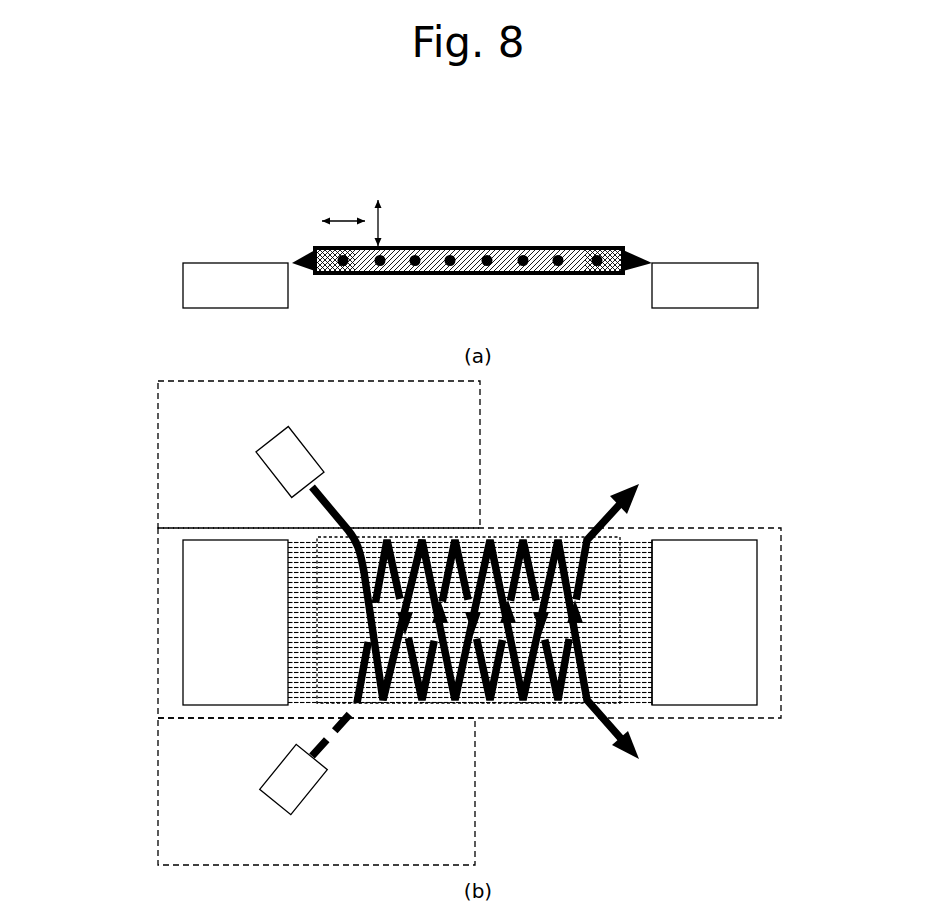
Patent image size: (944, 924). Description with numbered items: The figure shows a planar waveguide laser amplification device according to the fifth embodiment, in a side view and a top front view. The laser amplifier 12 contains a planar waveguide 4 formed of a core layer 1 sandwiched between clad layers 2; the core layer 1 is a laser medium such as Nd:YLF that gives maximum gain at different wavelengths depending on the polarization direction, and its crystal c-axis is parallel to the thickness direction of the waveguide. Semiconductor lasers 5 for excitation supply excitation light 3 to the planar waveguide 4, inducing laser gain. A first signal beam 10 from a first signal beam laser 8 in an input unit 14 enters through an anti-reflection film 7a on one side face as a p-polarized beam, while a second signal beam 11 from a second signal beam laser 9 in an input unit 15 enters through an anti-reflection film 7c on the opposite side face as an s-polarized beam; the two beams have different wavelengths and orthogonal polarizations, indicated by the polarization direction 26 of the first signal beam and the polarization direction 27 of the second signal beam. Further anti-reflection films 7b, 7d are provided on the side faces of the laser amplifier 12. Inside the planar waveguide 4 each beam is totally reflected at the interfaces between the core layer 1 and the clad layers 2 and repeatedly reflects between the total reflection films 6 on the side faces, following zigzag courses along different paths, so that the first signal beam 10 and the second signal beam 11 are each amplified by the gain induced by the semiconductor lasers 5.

The core layer 1 is at (622, 252).
The clad layer 2 is at (542, 248).
The excitation light 3 is at (310, 258).
The planar waveguide 4 is at (493, 248).
The semiconductor laser for excitation 5 is at (722, 263).
The total reflection film 6 is at (424, 537).
The anti-reflection film 7a is at (366, 706).
The anti-reflection film 7b is at (582, 537).
The anti-reflection film 7c is at (368, 537).
The anti-reflection film 7d is at (583, 705).
The first signal beam laser 8 is at (265, 798).
The second signal beam laser 9 is at (270, 441).
The first signal beam 10 is at (640, 487).
The second signal beam 11 is at (337, 505).
The laser amplifier 12 is at (785, 663).
The input unit 14 is at (158, 793).
The input unit 15 is at (158, 445).
The polarization direction of first signal beam 26 is at (345, 218).
The polarization direction of second signal beam 27 is at (378, 203).